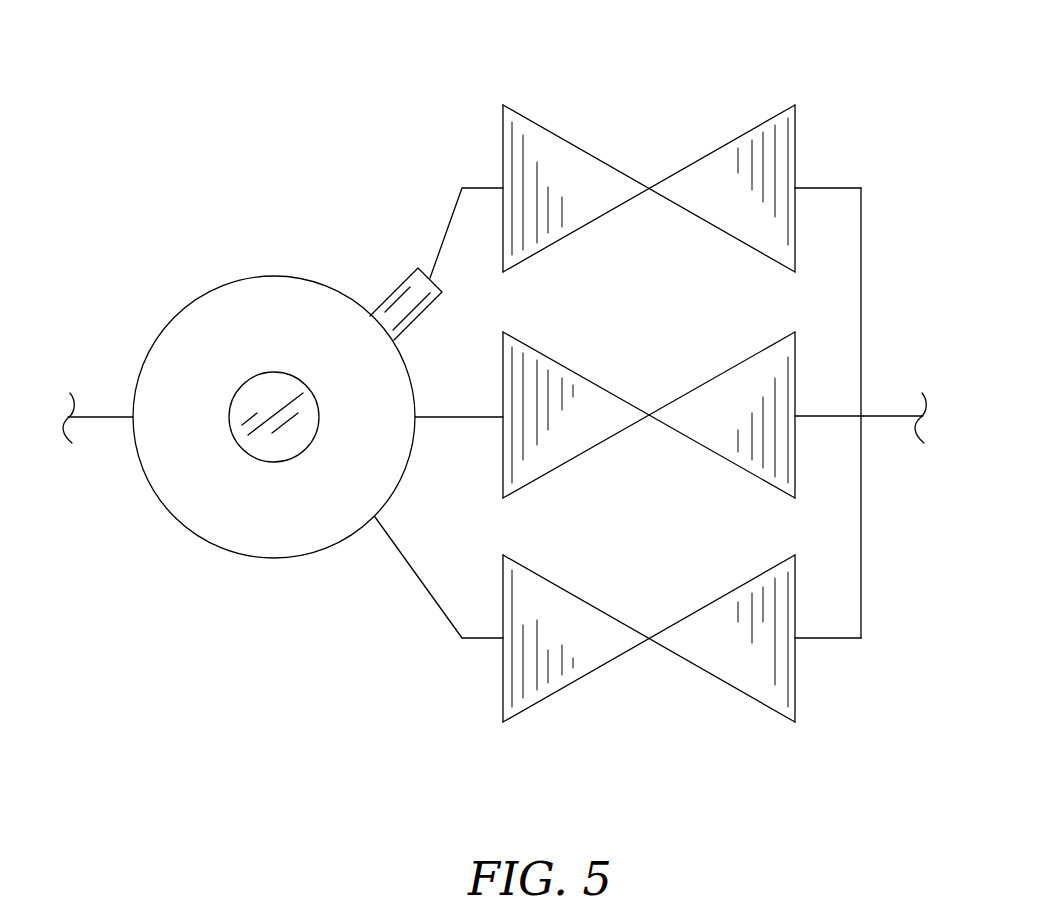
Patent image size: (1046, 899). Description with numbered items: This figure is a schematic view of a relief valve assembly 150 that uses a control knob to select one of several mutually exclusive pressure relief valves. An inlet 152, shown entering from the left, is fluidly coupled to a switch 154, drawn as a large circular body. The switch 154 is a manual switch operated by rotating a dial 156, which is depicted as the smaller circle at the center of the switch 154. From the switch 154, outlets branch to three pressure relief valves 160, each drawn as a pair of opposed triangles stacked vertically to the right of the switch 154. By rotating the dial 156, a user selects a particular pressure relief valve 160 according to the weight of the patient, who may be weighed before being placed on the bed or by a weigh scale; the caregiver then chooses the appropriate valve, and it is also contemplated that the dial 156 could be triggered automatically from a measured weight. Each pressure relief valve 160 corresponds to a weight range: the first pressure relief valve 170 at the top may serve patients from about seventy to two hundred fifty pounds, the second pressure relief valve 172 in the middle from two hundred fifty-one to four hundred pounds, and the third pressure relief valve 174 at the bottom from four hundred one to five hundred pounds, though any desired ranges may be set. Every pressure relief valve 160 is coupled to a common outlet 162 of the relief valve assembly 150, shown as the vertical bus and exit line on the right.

The relief valve assembly 150 is at (341, 116).
The inlet 152 is at (108, 417).
The switch 154 is at (257, 302).
The dial 156 is at (273, 450).
The pressure relief valve 160 is at (538, 140).
The outlet 162 is at (889, 412).
The first pressure relief valve 170 is at (600, 177).
The second pressure relief valve 172 is at (603, 407).
The third pressure relief valve 174 is at (605, 633).